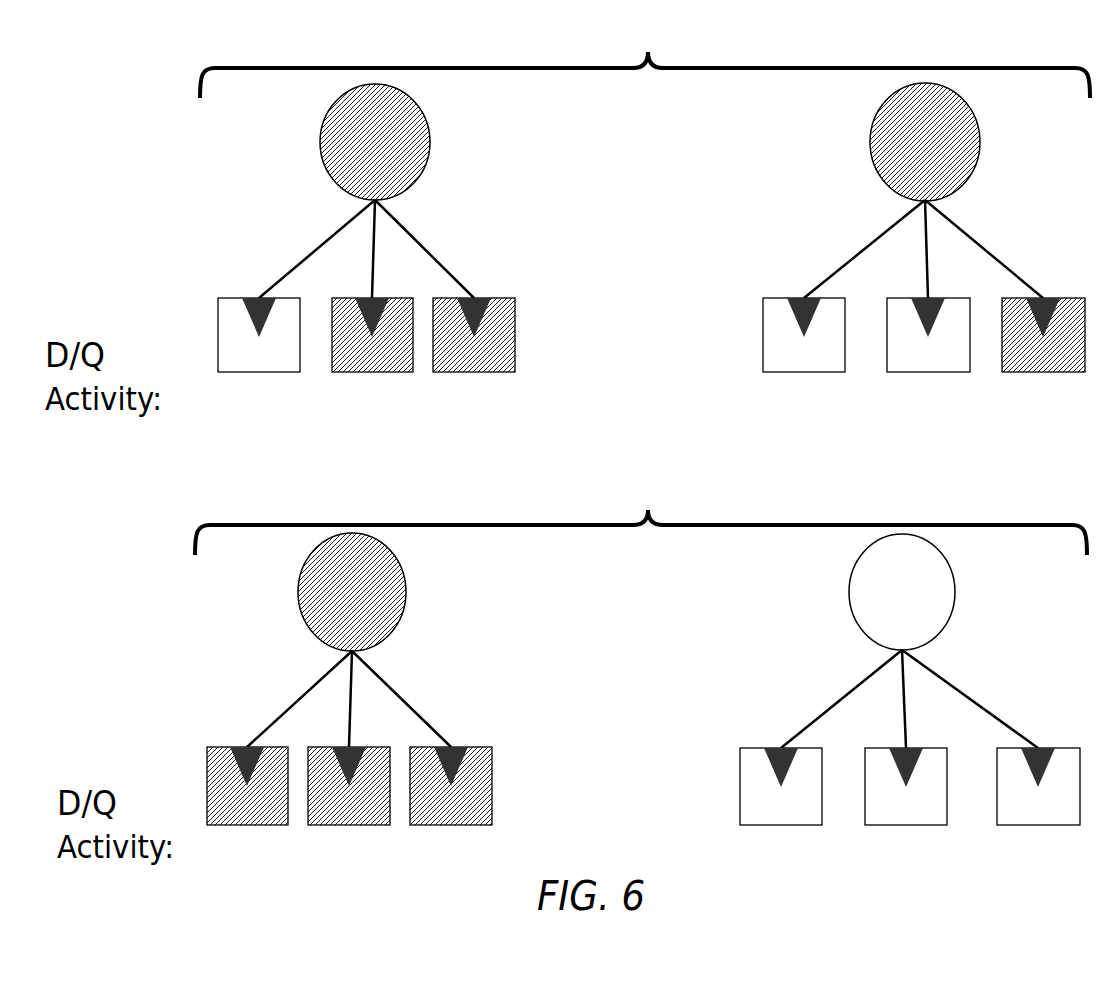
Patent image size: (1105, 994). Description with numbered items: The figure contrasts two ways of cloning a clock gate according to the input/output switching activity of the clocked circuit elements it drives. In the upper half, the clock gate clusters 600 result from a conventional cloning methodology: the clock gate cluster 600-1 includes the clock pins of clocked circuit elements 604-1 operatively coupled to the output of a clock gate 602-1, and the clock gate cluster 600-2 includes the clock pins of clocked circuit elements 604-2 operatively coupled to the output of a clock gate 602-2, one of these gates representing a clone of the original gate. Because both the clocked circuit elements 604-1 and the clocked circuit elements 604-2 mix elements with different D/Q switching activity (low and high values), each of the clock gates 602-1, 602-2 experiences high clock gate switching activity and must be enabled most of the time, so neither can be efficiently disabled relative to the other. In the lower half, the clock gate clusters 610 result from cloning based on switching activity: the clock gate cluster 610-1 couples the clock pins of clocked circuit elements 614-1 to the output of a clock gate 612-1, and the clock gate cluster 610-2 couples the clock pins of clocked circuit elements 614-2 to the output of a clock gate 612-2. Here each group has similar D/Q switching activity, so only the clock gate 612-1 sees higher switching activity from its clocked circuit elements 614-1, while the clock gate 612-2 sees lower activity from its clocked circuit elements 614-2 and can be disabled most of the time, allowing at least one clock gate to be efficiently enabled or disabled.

The clock gate clusters 600 is at (609, 256).
The clock gate cluster 600-1 is at (221, 134).
The clock gate cluster 600-2 is at (764, 134).
The clock gate 602-1 is at (428, 135).
The clock gate 602-2 is at (978, 135).
The clocked circuit elements 604-1 is at (207, 422).
The clocked circuit elements 604-2 is at (1083, 422).
The clock gate clusters 610 is at (606, 706).
The clock gate cluster 610-1 is at (217, 592).
The clock gate cluster 610-2 is at (789, 593).
The clock gate 612-1 is at (405, 590).
The clock gate 612-2 is at (953, 590).
The clocked circuit elements 614-1 is at (510, 863).
The clocked circuit elements 614-2 is at (1067, 863).